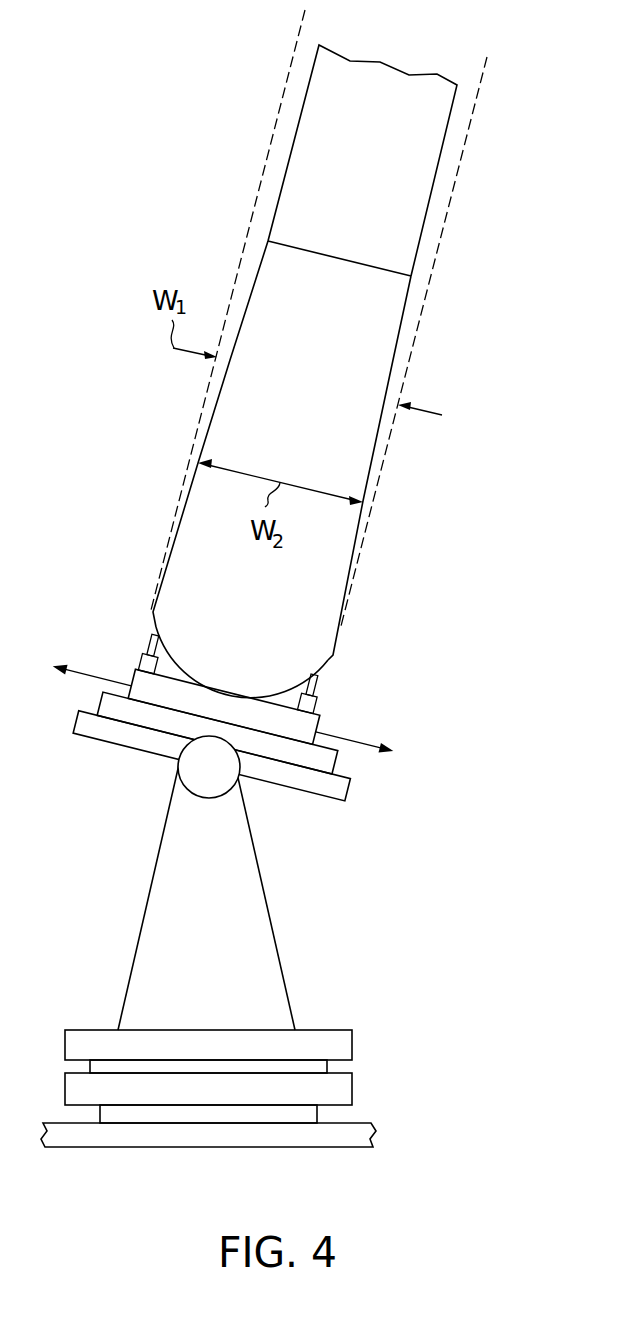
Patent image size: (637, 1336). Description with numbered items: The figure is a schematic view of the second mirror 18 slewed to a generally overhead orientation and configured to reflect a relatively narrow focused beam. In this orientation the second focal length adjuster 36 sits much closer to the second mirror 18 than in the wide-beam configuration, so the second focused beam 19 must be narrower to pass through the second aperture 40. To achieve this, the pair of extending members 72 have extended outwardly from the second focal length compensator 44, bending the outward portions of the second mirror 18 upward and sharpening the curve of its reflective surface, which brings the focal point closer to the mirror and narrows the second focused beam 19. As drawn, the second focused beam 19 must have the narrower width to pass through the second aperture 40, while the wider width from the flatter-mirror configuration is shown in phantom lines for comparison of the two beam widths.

The second focal length adjuster 36 is at (427, 213).
The second aperture 40 is at (340, 258).
The second focused beam 19 is at (400, 318).
The second mirror 18 is at (153, 622).
The extending members 72 is at (147, 657).
The second focal length compensator 44 is at (322, 723).